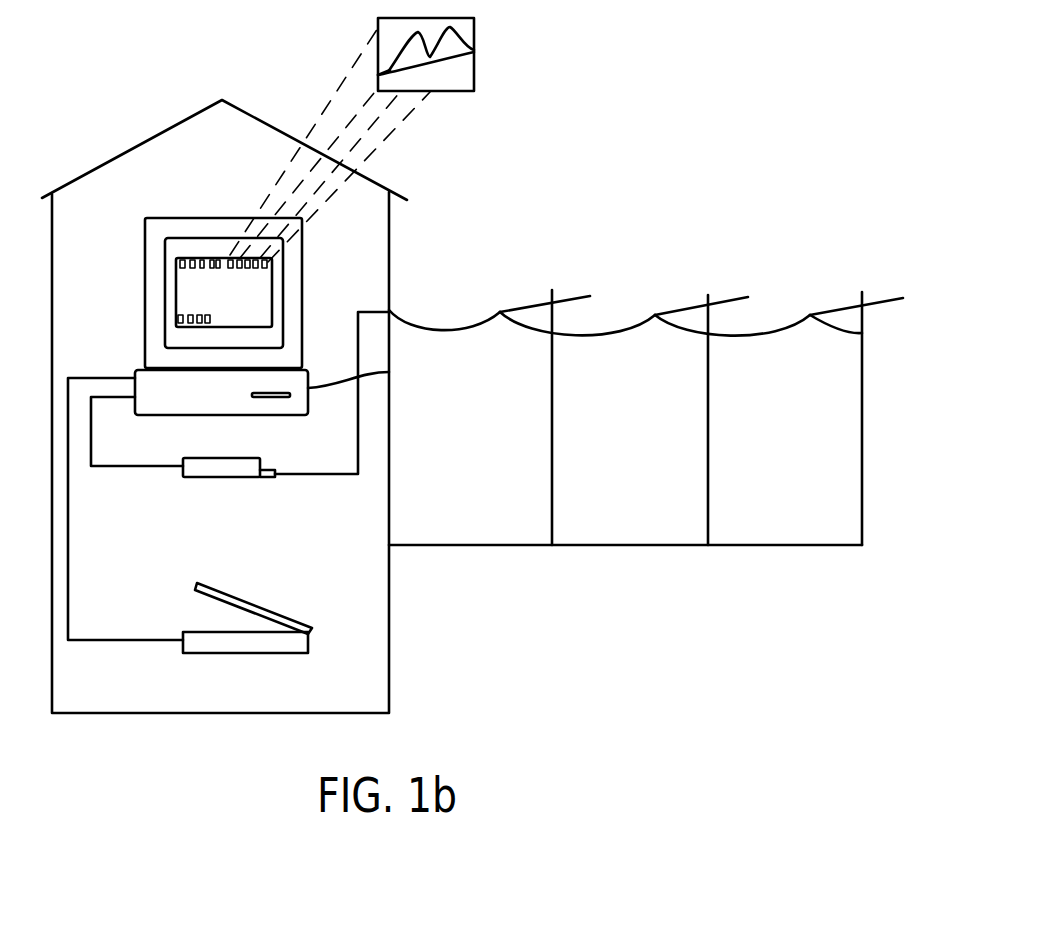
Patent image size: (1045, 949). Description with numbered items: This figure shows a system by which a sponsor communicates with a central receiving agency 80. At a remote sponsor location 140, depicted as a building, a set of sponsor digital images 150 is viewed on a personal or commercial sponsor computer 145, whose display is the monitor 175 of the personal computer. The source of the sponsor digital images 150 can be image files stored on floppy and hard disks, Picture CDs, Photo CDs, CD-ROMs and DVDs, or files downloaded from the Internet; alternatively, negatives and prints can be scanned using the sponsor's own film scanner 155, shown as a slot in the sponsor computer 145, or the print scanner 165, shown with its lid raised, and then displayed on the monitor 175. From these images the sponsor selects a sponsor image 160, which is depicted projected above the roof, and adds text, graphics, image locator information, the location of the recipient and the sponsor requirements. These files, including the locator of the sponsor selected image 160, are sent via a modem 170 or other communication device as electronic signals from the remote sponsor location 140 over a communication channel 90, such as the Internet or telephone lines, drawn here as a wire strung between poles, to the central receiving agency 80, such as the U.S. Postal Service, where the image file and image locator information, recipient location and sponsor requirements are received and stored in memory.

The remote sponsor location 140 is at (92, 168).
The sponsor digital image 150 is at (272, 262).
The monitor 175 is at (182, 257).
The sponsor selected image 160 is at (474, 52).
The sponsor computer 145 is at (389, 372).
The film scanner 155 is at (277, 398).
The modem 170 is at (197, 477).
The print scanner 165 is at (308, 643).
The communication channel 90 is at (597, 337).
The central receiving agency 80 is at (900, 299).